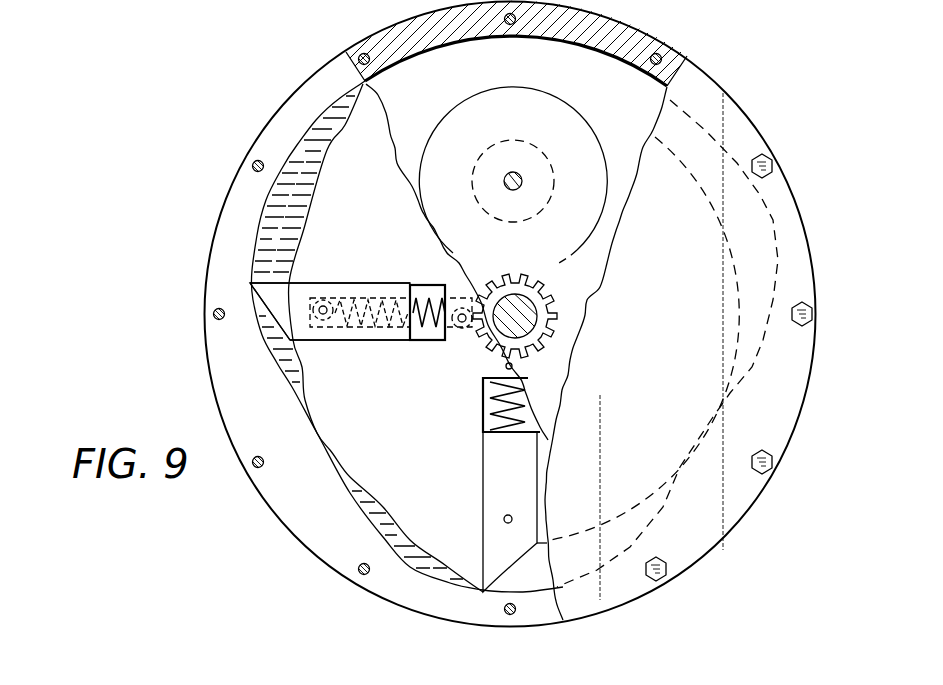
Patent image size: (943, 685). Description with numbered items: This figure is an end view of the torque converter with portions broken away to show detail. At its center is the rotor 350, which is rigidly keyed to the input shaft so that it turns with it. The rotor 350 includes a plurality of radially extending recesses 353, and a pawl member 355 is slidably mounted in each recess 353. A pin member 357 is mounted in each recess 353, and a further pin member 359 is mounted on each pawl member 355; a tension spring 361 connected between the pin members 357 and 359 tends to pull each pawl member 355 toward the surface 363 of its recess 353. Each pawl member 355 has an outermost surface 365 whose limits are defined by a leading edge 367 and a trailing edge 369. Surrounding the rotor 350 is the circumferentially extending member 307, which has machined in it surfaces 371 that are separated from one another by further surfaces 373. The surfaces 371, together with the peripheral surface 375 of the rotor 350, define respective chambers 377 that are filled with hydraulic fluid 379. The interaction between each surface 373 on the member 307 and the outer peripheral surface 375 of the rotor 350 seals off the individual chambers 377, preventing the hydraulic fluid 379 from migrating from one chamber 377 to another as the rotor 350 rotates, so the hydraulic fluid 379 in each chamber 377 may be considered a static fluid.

The circumferentially extending member 307 is at (317, 510).
The rotor 350 is at (425, 444).
The radially extending recess 353 is at (422, 292).
The pawl member 355 is at (273, 293).
The pin member 357 is at (462, 323).
The further pin member 359 is at (325, 306).
The tension spring 361 is at (365, 288).
The surface of recess 363 is at (450, 333).
The outermost surface 365 is at (270, 318).
The leading edge 367 is at (290, 343).
The trailing edge 369 is at (250, 283).
The surface 371 is at (281, 161).
The further surface 373 is at (316, 434).
The peripheral surface 375 is at (300, 237).
The chamber 377 is at (320, 130).
The hydraulic fluid 379 is at (330, 181).